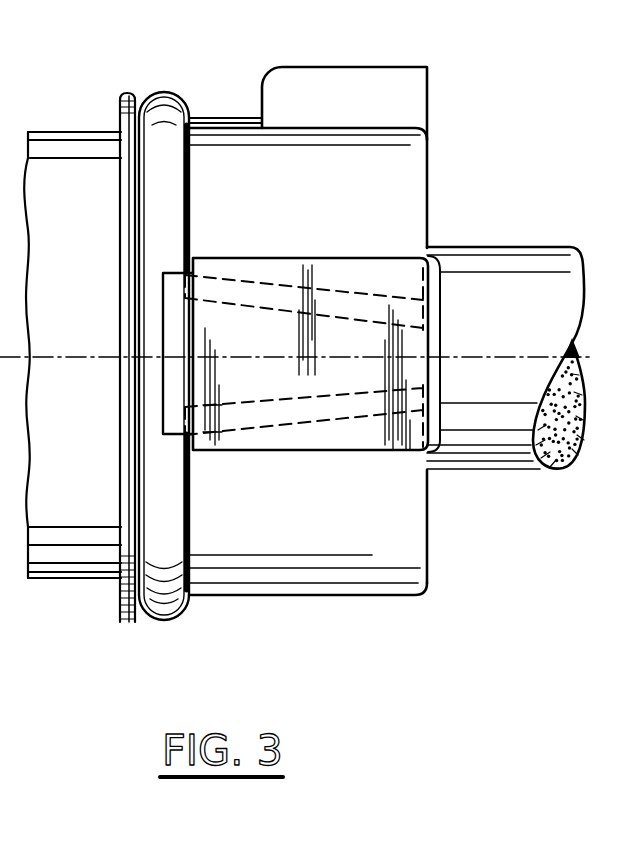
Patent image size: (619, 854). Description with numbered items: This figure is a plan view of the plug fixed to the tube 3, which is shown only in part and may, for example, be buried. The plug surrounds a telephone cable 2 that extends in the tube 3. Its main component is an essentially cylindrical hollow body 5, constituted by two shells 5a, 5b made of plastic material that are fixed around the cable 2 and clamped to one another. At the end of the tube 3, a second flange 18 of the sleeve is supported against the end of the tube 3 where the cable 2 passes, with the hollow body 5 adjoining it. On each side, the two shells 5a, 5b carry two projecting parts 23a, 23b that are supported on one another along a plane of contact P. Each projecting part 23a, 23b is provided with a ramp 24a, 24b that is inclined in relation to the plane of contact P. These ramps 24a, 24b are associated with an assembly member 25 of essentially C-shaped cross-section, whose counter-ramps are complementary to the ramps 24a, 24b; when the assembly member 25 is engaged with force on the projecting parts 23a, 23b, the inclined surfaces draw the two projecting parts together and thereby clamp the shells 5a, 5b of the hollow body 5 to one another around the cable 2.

The cable 2 is at (543, 257).
The tube 3 is at (88, 552).
The hollow body 5 is at (443, 210).
The shell 5a is at (410, 175).
The shell 5b is at (403, 538).
The second flange 18 is at (123, 112).
The projecting part 23a is at (167, 313).
The projecting part 23b is at (173, 382).
The ramp 24a is at (284, 285).
The ramp 24b is at (298, 395).
The assembly member 25 is at (357, 437).
The plane of contact P is at (262, 358).